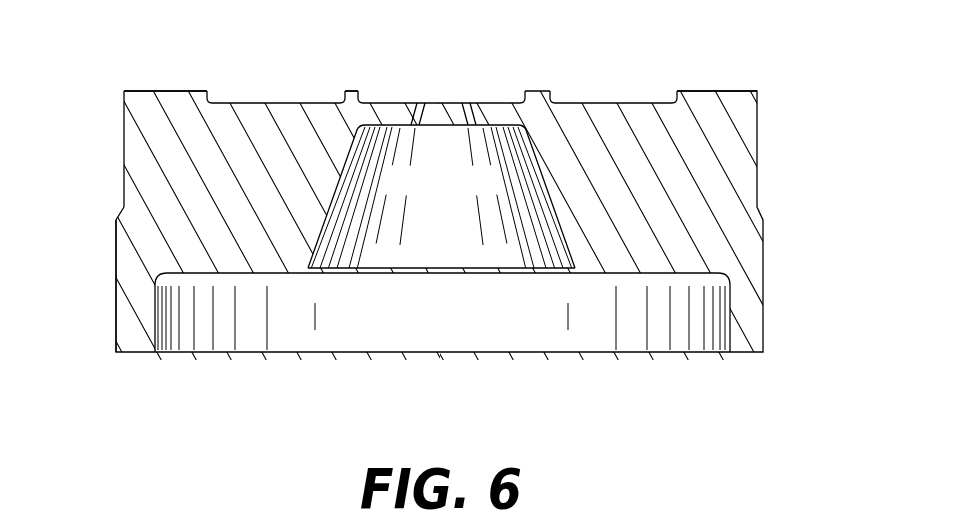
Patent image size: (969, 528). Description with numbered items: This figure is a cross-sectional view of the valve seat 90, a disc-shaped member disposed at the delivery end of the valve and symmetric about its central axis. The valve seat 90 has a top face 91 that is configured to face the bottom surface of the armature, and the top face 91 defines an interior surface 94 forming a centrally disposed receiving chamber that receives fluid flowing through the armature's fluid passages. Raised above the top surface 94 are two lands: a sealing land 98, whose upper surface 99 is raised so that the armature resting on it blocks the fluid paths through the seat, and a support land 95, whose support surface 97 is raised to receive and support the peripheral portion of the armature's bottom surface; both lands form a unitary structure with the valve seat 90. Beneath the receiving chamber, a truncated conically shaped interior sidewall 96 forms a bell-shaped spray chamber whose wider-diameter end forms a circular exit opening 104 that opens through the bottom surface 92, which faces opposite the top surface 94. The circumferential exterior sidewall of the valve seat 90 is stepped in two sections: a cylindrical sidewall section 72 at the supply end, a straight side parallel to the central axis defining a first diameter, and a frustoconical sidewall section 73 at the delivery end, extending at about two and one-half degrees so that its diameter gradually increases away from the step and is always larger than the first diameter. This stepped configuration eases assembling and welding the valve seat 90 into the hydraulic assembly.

The sidewall section 72 is at (124, 160).
The sidewall section 73 is at (116, 298).
The valve seat 90 is at (743, 257).
The top face 91 is at (496, 76).
The bottom surface 92 is at (584, 274).
The interior surface 94 is at (406, 100).
The support land 95 is at (158, 128).
The conically shaped sidewall 96 is at (408, 228).
The support surface 97 is at (168, 90).
The sealing land 98 is at (325, 95).
The upper surface 99 is at (347, 90).
The exit opening 104 is at (470, 274).